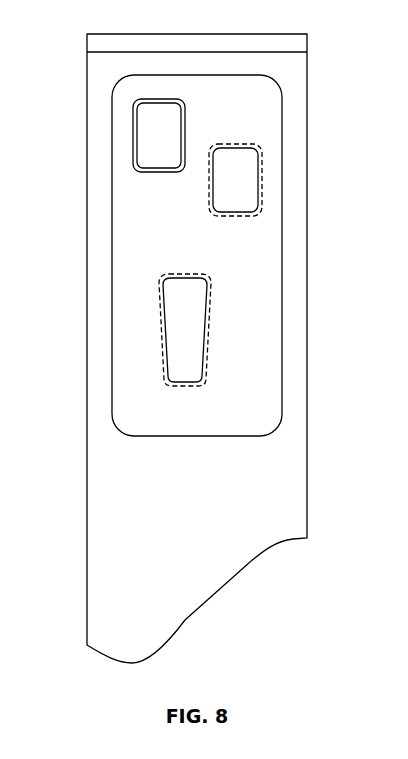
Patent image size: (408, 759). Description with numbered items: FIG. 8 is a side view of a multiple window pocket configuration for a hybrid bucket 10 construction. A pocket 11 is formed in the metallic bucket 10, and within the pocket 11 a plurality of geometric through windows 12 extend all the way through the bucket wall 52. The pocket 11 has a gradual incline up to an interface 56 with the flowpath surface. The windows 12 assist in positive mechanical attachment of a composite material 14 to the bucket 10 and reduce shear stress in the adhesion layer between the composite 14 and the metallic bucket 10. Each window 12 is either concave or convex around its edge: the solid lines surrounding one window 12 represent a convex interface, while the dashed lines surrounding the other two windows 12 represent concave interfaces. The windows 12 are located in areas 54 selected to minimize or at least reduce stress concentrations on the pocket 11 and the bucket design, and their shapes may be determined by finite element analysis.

The hybrid bucket 10 is at (161, 524).
The pocket 11 is at (130, 397).
The window 12 is at (158, 139).
The composite material 14 is at (270, 333).
The bucket wall 52 is at (251, 272).
The area 54 is at (232, 143).
The interface 56 is at (253, 433).